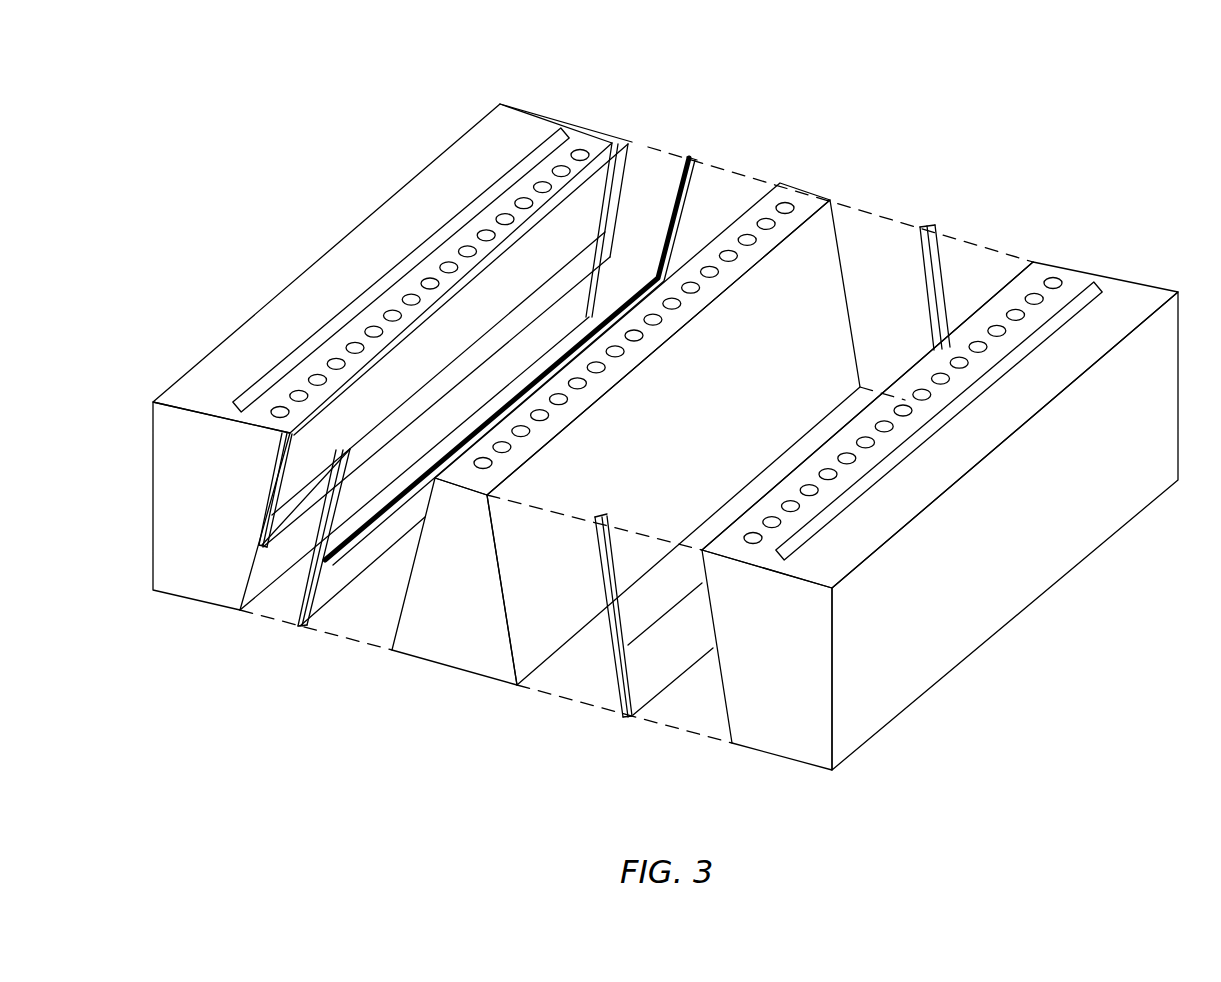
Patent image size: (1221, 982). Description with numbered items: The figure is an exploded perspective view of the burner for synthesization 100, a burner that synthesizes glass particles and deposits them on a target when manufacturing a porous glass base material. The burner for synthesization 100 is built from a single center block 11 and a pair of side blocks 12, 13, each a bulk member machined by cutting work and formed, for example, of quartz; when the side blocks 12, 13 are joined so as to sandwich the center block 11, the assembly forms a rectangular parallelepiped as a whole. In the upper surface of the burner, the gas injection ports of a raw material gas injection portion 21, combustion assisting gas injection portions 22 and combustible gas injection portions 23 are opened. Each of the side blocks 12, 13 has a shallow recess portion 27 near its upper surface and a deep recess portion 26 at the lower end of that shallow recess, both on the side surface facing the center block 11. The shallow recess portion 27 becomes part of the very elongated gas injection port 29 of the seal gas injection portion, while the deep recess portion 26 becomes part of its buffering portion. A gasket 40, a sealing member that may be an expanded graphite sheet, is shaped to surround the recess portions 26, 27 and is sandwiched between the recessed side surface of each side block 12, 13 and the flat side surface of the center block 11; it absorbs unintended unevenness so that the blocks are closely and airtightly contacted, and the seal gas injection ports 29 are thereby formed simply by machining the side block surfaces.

The burner for synthesization 100 is at (284, 193).
The center block 11 is at (508, 697).
The side block 12 is at (237, 622).
The side block 13 is at (832, 787).
The raw material gas injection portion 21 is at (802, 185).
The combustion assisting gas injection portion 22 is at (598, 134).
The combustible gas injection portion 23 is at (573, 124).
The deep recess portion 26 is at (606, 254).
The shallow recess portion 27 is at (592, 183).
The gas injection port 29 is at (1043, 262).
The gasket 40 is at (691, 160).